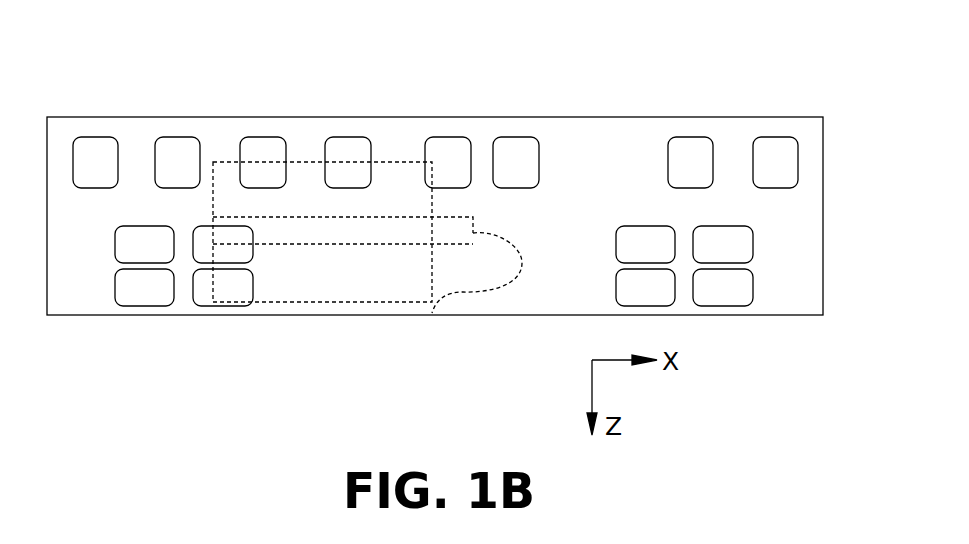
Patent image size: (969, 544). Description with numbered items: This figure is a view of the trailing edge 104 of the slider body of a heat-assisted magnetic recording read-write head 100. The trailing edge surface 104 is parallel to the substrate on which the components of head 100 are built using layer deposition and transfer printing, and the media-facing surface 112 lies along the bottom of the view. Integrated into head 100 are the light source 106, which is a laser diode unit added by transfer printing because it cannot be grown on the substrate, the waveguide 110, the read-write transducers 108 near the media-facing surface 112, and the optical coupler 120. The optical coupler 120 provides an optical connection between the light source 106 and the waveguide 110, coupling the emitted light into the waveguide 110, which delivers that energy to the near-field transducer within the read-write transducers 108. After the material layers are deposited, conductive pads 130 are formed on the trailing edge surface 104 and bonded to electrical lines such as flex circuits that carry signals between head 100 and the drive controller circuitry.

The read-write head 100 is at (435, 221).
The trailing edge 104 is at (142, 128).
The conductive pads 130 is at (335, 137).
The media-facing surface 112 is at (219, 305).
The light source 106 is at (323, 303).
The optical coupler 120 is at (473, 246).
The waveguide 110 is at (518, 280).
The read-write transducers 108 is at (433, 338).